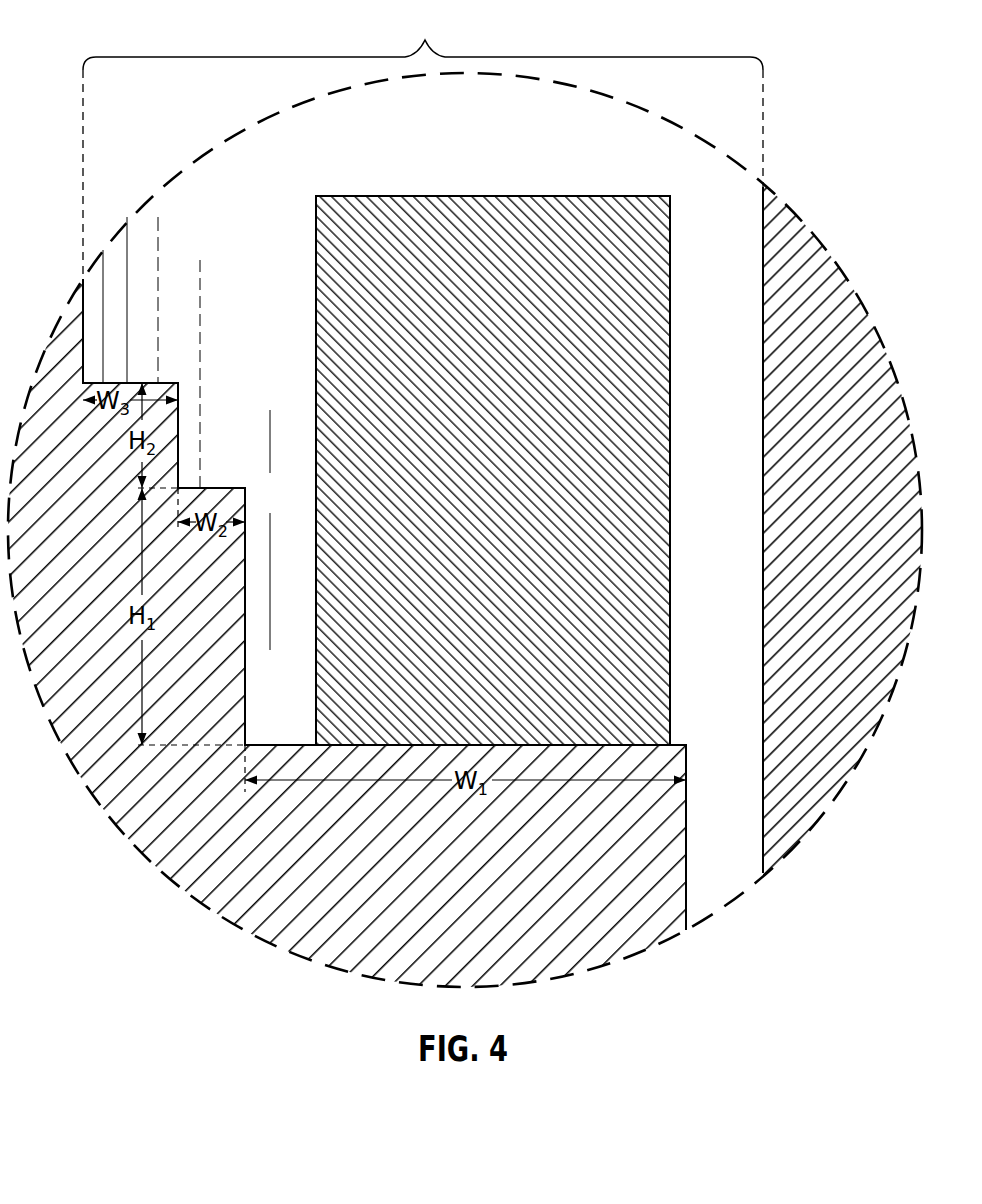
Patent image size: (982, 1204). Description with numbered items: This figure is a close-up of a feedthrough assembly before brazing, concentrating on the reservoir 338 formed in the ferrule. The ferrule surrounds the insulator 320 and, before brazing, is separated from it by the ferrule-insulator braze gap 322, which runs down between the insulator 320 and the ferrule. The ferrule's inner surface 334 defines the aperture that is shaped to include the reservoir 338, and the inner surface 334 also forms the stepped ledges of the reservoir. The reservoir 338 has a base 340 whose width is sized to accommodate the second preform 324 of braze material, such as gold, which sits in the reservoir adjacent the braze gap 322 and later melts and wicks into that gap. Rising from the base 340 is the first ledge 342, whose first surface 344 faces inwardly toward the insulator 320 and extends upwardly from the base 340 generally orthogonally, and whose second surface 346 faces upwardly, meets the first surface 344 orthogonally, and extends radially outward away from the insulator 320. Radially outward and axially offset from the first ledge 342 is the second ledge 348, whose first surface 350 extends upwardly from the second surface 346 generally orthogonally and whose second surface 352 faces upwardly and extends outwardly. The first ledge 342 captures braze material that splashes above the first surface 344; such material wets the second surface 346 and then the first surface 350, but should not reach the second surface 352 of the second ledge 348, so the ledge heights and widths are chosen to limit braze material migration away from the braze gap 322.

The insulator 320 is at (811, 290).
The ferrule-insulator braze gap 322 is at (725, 875).
The second preform 324 is at (487, 230).
The ferrule inner surface 334 is at (85, 305).
The reservoir 338 is at (423, 143).
The base 340 is at (262, 746).
The first ledge 342 is at (246, 488).
The first surface of the first ledge 344 is at (246, 556).
The second surface of the first ledge 346 is at (207, 488).
The second ledge 348 is at (178, 383).
The first surface of the second ledge 350 is at (179, 403).
The second surface of the second ledge 352 is at (138, 382).